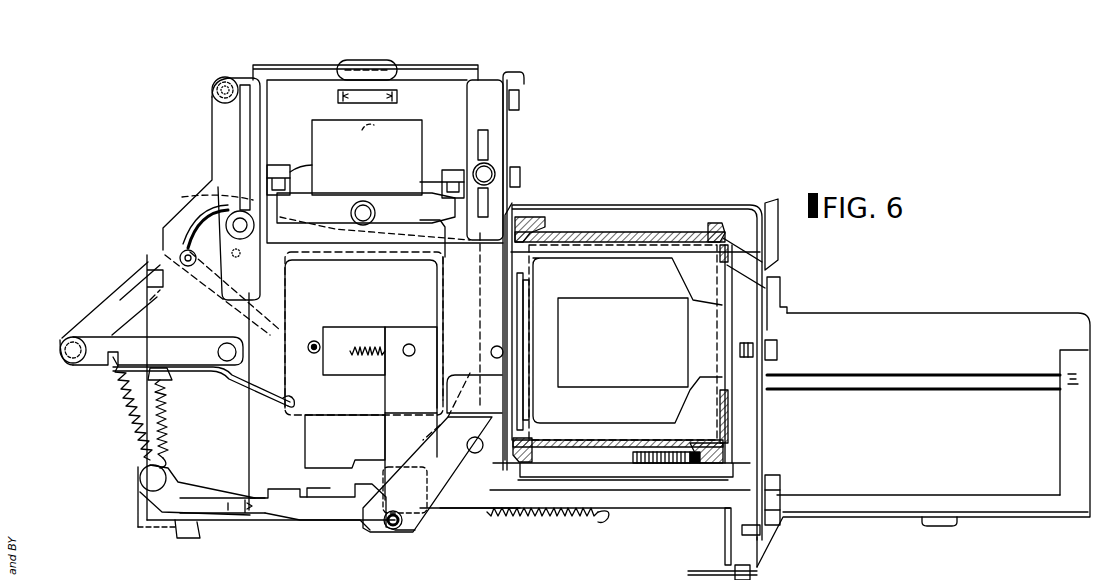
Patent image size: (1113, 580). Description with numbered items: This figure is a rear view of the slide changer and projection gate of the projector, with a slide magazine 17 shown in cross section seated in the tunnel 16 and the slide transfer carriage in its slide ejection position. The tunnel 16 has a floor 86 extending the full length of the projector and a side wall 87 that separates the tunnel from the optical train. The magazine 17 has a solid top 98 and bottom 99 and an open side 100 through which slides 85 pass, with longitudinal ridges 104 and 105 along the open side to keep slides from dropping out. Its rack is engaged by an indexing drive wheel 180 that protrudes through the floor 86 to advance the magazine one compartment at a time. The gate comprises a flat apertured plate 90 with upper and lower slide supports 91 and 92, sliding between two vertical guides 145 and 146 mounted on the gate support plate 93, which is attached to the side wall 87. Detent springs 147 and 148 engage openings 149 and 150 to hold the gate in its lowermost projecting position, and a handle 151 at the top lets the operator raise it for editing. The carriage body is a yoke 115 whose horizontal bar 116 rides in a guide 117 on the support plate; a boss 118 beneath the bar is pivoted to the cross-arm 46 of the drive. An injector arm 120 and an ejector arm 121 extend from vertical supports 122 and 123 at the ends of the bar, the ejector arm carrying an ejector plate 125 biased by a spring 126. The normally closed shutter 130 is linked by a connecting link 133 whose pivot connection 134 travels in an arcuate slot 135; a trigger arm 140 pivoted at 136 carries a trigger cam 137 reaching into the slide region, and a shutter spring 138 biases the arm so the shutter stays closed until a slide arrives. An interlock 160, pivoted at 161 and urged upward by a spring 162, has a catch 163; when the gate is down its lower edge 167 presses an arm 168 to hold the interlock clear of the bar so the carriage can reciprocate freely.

The tunnel 16 is at (598, 200).
The slide magazine 17 is at (689, 219).
The cross-arm 46 is at (728, 570).
The slide 85 is at (777, 340).
The floor 86 is at (572, 445).
The side wall 87 is at (518, 204).
The apertured plate 90 is at (297, 75).
The upper slide support 91 is at (393, 198).
The lower slide support 92 is at (310, 455).
The gate support plate 93 is at (140, 290).
The top 98 is at (643, 232).
The bottom 99 is at (604, 463).
The open side 100 is at (506, 230).
The longitudinal ridge 104 is at (533, 246).
The longitudinal ridge 105 is at (527, 440).
The yoke 115 is at (848, 518).
The horizontal bar 116 is at (877, 493).
The guide 117 is at (433, 515).
The boss 118 is at (760, 547).
The injector arm 120 is at (925, 312).
The ejector arm 121 is at (413, 332).
The vertical support 122 is at (1062, 457).
The vertical support 123 is at (385, 440).
The ejector plate 125 is at (440, 290).
The spring 126 is at (355, 343).
The shutter 130 is at (373, 218).
The connecting link 133 is at (97, 320).
The pivot connection 134 is at (175, 256).
The arcuate slot 135 is at (205, 212).
The trigger arm pivot 136 is at (218, 351).
The trigger cam 137 is at (270, 398).
The shutter spring 138 is at (122, 404).
The trigger arm 140 is at (163, 338).
The vertical guide 145 is at (215, 100).
The vertical guide 146 is at (498, 118).
The detent spring 147 is at (278, 165).
The detent spring 148 is at (450, 170).
The opening 149 is at (312, 165).
The opening 150 is at (442, 182).
The handle 151 is at (398, 62).
The interlock 160 is at (178, 535).
The interlock pivot 161 is at (140, 478).
The spring 162 is at (170, 414).
The catch 163 is at (312, 496).
The lower edge 167 is at (340, 521).
The arm 168 is at (235, 522).
The indexing drive wheel 180 is at (665, 465).